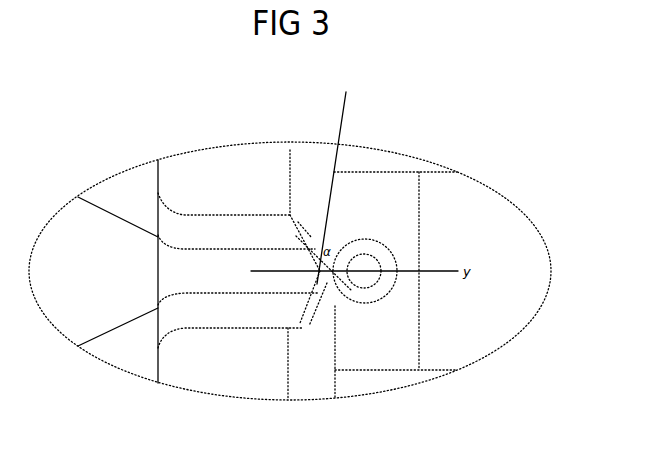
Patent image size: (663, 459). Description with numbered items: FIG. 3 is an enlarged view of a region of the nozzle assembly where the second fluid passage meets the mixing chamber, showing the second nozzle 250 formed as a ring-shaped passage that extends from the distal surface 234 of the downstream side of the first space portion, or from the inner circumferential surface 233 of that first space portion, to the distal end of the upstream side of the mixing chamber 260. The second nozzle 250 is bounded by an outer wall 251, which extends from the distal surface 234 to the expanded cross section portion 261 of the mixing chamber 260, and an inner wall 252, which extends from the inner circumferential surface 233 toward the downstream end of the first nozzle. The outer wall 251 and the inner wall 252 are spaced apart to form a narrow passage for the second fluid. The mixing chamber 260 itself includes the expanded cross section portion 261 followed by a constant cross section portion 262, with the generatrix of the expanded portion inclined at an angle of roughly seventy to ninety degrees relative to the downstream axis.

The inner circumferential surface 233 is at (213, 215).
The distal surface 234 is at (290, 152).
The second nozzle 250 is at (298, 222).
The outer wall 251 is at (305, 228).
The inner wall 252 is at (300, 232).
The mixing chamber 260 is at (357, 172).
The expanded cross section portion 261 is at (328, 330).
The constant cross section portion 262 is at (346, 367).